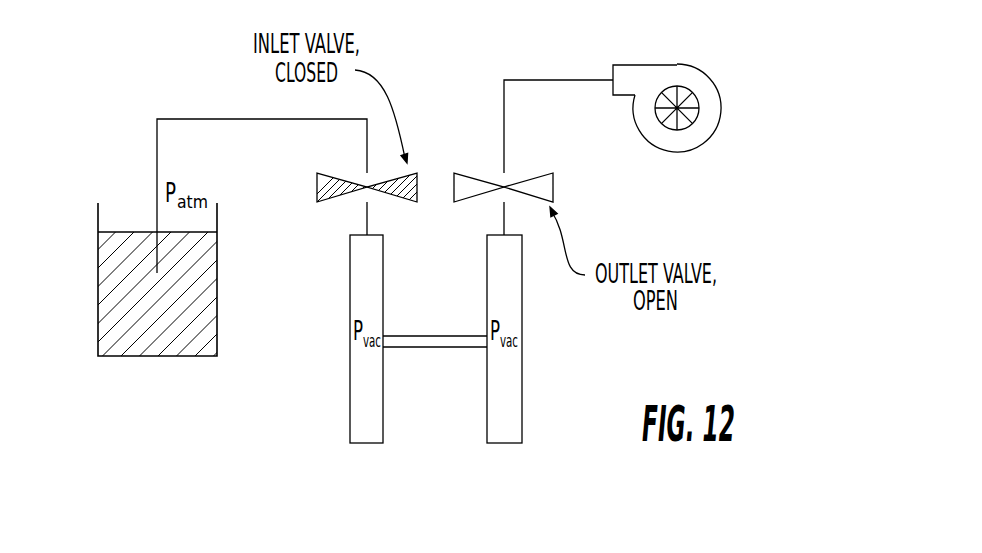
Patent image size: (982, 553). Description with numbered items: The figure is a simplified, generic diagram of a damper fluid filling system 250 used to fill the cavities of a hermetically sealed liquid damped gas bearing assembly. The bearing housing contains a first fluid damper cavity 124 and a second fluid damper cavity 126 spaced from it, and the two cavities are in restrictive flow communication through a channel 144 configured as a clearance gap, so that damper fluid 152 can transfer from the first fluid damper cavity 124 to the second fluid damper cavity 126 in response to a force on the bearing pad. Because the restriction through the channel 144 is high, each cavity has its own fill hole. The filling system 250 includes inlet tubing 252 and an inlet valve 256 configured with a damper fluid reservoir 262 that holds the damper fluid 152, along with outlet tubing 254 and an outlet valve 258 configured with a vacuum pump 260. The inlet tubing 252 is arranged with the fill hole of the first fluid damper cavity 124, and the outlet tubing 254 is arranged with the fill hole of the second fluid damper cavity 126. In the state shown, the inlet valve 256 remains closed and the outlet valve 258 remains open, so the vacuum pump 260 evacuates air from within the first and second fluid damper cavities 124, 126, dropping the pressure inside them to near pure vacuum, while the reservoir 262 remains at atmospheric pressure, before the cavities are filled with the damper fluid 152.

The damper fluid filling system 250 is at (770, 98).
The inlet tubing 252 is at (204, 119).
The outlet tubing 254 is at (538, 80).
The inlet valve 256 is at (322, 205).
The outlet valve 258 is at (540, 173).
The vacuum pump 260 is at (681, 65).
The damper fluid reservoir 262 is at (90, 262).
The damper fluid 152 is at (108, 316).
The first fluid damper cavity 124 is at (355, 397).
The second fluid damper cavity 126 is at (514, 402).
The channel 144 is at (447, 347).